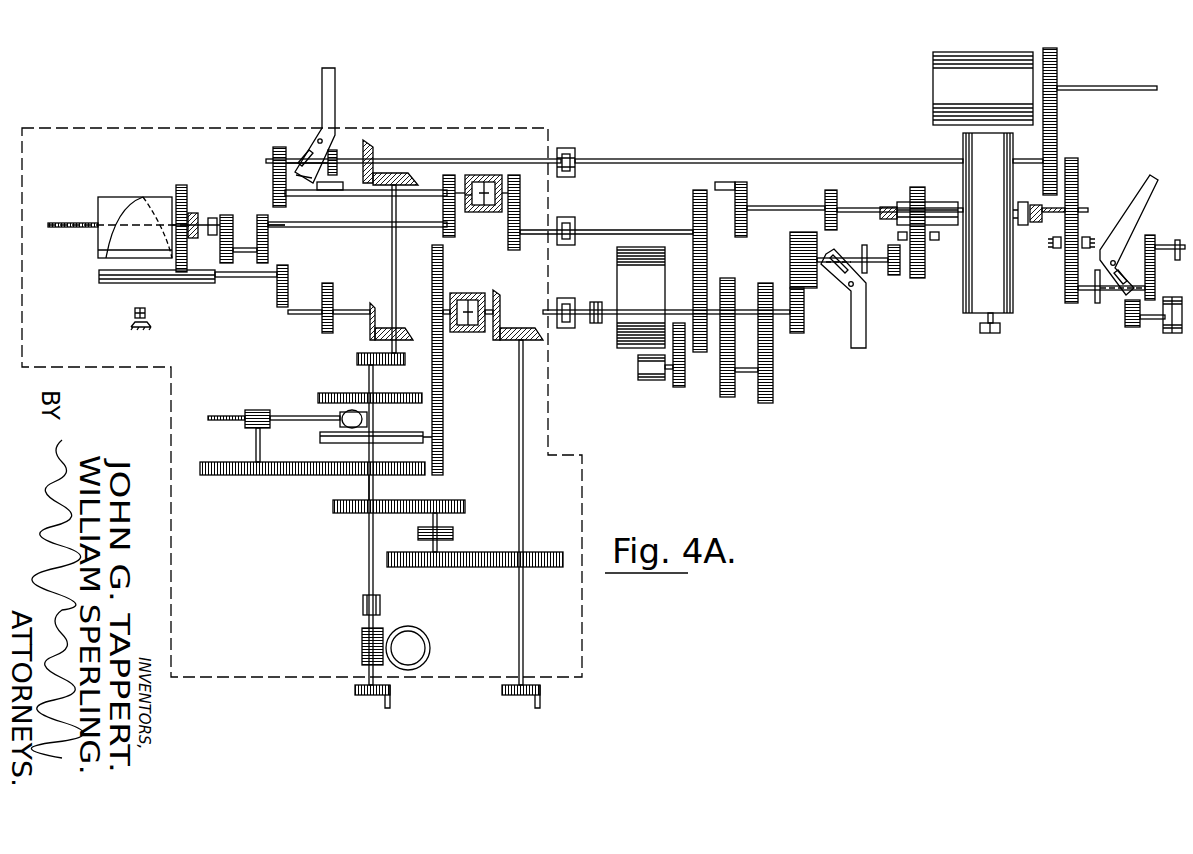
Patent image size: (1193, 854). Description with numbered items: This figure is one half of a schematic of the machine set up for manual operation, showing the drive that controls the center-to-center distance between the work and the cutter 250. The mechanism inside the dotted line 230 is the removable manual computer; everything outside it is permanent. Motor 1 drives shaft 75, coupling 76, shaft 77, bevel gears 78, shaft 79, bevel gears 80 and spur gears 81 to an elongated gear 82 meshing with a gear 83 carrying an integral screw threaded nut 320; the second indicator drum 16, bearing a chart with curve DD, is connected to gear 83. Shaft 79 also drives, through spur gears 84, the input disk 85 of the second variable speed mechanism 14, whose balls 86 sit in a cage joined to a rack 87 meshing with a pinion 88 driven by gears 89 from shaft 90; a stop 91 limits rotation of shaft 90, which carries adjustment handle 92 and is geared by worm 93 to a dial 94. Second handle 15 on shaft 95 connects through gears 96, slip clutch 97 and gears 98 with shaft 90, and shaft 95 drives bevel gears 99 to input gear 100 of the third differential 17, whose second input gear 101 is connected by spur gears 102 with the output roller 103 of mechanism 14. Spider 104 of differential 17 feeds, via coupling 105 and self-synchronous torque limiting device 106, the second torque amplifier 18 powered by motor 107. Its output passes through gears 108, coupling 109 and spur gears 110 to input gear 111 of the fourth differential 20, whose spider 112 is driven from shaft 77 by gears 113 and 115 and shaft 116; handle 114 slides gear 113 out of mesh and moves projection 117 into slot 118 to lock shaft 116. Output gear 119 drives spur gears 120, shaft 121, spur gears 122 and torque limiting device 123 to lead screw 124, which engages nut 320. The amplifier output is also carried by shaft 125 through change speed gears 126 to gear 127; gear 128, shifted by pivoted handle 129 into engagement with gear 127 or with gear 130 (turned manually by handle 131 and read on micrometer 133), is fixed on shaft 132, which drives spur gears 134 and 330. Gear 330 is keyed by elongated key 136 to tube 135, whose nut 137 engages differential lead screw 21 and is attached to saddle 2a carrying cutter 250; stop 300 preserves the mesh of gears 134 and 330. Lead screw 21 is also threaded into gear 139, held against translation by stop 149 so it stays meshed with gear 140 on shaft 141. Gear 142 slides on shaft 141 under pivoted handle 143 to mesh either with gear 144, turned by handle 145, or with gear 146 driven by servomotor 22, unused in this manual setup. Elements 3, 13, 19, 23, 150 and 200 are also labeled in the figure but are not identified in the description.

The motor 1 is at (946, 79).
The saddle 2a is at (984, 143).
The gear and shaft 3 is at (1125, 86).
The drive train section 13 is at (776, 145).
The second variable speed mechanism 14 is at (301, 381).
The second handle 15 is at (508, 692).
The second indicator drum 16 is at (108, 200).
The third differential 17 is at (474, 361).
The second torque amplifier 18 is at (620, 250).
The transmission section 19 is at (948, 300).
The fourth differential 20 is at (492, 256).
The differential lead screw 21 is at (1064, 211).
The servomotor 22 is at (1174, 334).
The shaft 23 is at (1186, 287).
The shaft 75 is at (620, 159).
The coupling 76 is at (567, 149).
The shaft 77 is at (348, 158).
The bevel gears 78 is at (374, 148).
The shaft 79 is at (392, 268).
The bevel gears 80 is at (382, 321).
The spur gears 81 is at (292, 332).
The elongated gear 82 is at (106, 284).
The gear 83 is at (180, 186).
The spur gears 84 is at (357, 356).
The input disk 85 is at (360, 394).
The pair of balls 86 is at (367, 419).
The rack 87 is at (208, 418).
The pinion 88 is at (256, 410).
The gears 89 is at (340, 475).
The shaft 90 is at (370, 520).
The stop 91 is at (363, 604).
The adjustment handle 92 is at (356, 694).
The worm 93 is at (362, 648).
The dial 94 is at (416, 639).
The shaft 95 is at (519, 416).
The gears 96 is at (494, 567).
The slip clutch 97 is at (453, 524).
The gears 98 is at (428, 500).
The bevel gears 99 is at (500, 298).
The input gear 100 is at (484, 330).
The second input gear 101 is at (447, 311).
The pair of spur gears 102 is at (455, 368).
The output roller 103 is at (320, 439).
The spider 104 is at (465, 293).
The coupling 105 is at (562, 330).
The self-synchronous torque limiting device 106 is at (600, 292).
The motor 107 is at (650, 380).
The pair of gears 108 is at (706, 244).
The coupling 109 is at (567, 218).
The pair of spur gears 110 is at (520, 215).
The input gear 111 is at (486, 212).
The spider 112 is at (488, 176).
The gear 113 is at (275, 144).
The handle 114 is at (322, 97).
The gear 115 is at (282, 226).
The shaft 116 is at (334, 195).
The projection 117 is at (308, 180).
The slot 118 is at (330, 190).
The output gear 119 is at (470, 176).
The spur gears 120 is at (443, 201).
The shaft 121 is at (352, 228).
The spur gears 122 is at (256, 206).
The self-synchronous torque limiting device 123 is at (213, 218).
The lead screw 124 is at (78, 223).
The shaft 125 is at (714, 344).
The change speed gears 126 is at (757, 427).
The gear 127 is at (797, 333).
The gear 128 is at (792, 236).
The pivotably mounted handle 129 is at (866, 340).
The gear 130 is at (828, 190).
The handle 131 is at (772, 201).
The shaft 132 is at (891, 273).
The micrometer 133 is at (898, 234).
The spur gear 134 is at (920, 262).
The tube 135 is at (939, 202).
The elongated key 136 is at (910, 190).
The screw threaded nut 137 is at (1024, 226).
The gear 139 is at (1078, 162).
The gear 140 is at (1074, 302).
The shaft 141 is at (1097, 303).
The gear 142 is at (1166, 322).
The pivotally mounted handle 143 is at (1146, 180).
The gear 144 is at (1150, 235).
The handle 145 is at (1178, 240).
The gear 146 is at (1128, 326).
The stop 149 is at (1087, 237).
The bearing 150 is at (146, 315).
The gear unit 200 is at (779, 256).
The removable computer 230 is at (204, 128).
The cutter 250 is at (980, 331).
The stop 300 is at (898, 234).
The screw threaded nut 320 is at (194, 240).
The spur gear 330 is at (918, 187).
The curve DD is at (104, 246).